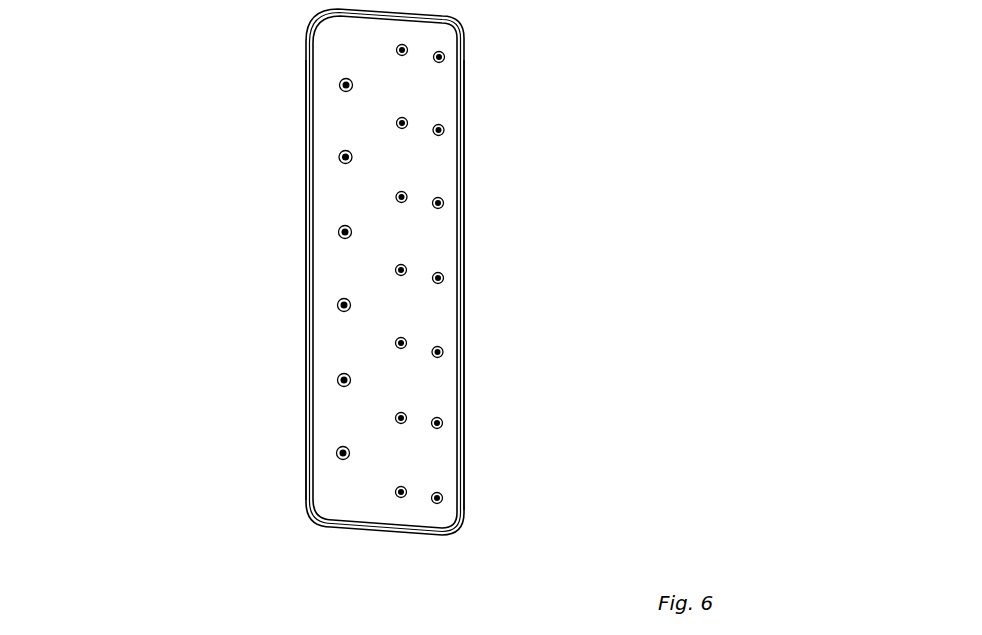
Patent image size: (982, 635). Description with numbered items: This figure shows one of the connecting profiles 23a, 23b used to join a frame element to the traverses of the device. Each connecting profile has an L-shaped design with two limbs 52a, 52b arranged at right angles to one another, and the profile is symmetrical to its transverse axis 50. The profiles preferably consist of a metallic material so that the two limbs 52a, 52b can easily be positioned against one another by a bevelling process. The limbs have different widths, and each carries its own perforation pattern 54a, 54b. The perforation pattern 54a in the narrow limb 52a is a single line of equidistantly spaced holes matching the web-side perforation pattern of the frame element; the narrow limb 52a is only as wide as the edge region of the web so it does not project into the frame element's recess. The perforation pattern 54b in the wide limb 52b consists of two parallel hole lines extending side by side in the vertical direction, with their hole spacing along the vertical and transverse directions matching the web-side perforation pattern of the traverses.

The connecting profile 23a is at (120, 50).
The connecting profile 23b is at (385, 286).
The transverse axis 50 is at (288, 275).
The narrow limb 52a is at (298, 486).
The wide limb 52b is at (469, 489).
The perforation pattern 54a is at (338, 381).
The perforation pattern 54b is at (443, 422).